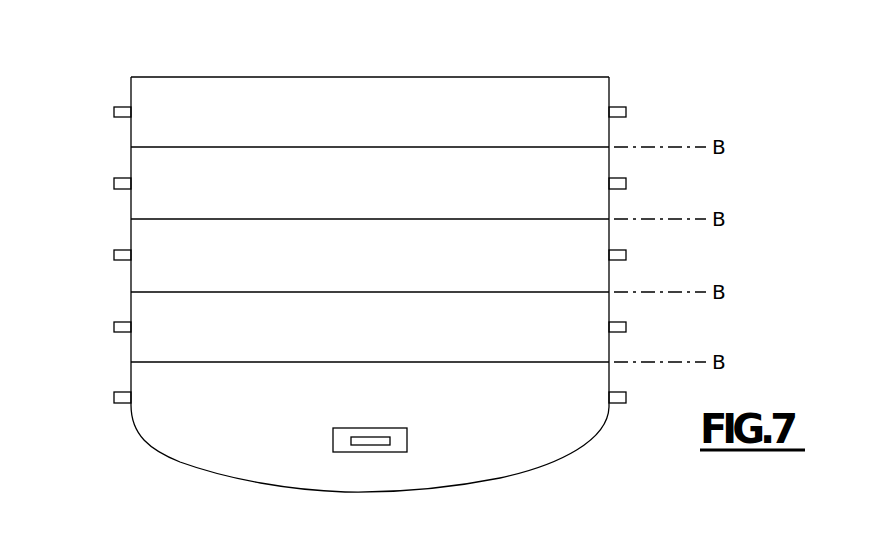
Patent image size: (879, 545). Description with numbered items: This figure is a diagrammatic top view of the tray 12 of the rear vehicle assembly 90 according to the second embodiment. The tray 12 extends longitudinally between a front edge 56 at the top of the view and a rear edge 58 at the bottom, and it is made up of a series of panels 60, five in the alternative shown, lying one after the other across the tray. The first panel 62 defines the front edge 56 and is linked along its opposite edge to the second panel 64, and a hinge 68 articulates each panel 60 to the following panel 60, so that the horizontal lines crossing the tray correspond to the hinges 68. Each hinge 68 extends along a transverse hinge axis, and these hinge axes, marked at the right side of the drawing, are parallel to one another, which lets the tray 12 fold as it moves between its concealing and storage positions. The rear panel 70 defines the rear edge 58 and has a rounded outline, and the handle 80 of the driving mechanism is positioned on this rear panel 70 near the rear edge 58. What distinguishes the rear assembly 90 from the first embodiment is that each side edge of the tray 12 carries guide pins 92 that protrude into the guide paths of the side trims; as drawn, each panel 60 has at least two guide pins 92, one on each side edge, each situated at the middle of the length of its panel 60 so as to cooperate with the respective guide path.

The rear vehicle assembly 90 is at (113, 46).
The tray 12 is at (95, 164).
The front edge 56 is at (300, 77).
The rear edge 58 is at (297, 490).
The first panel 62 is at (531, 105).
The hinge 68 is at (177, 147).
The guide pin 92 is at (114, 108).
The second panel 64 is at (586, 197).
The panels 60 is at (572, 258).
The rear panel 70 is at (549, 420).
The handle 80 is at (390, 441).